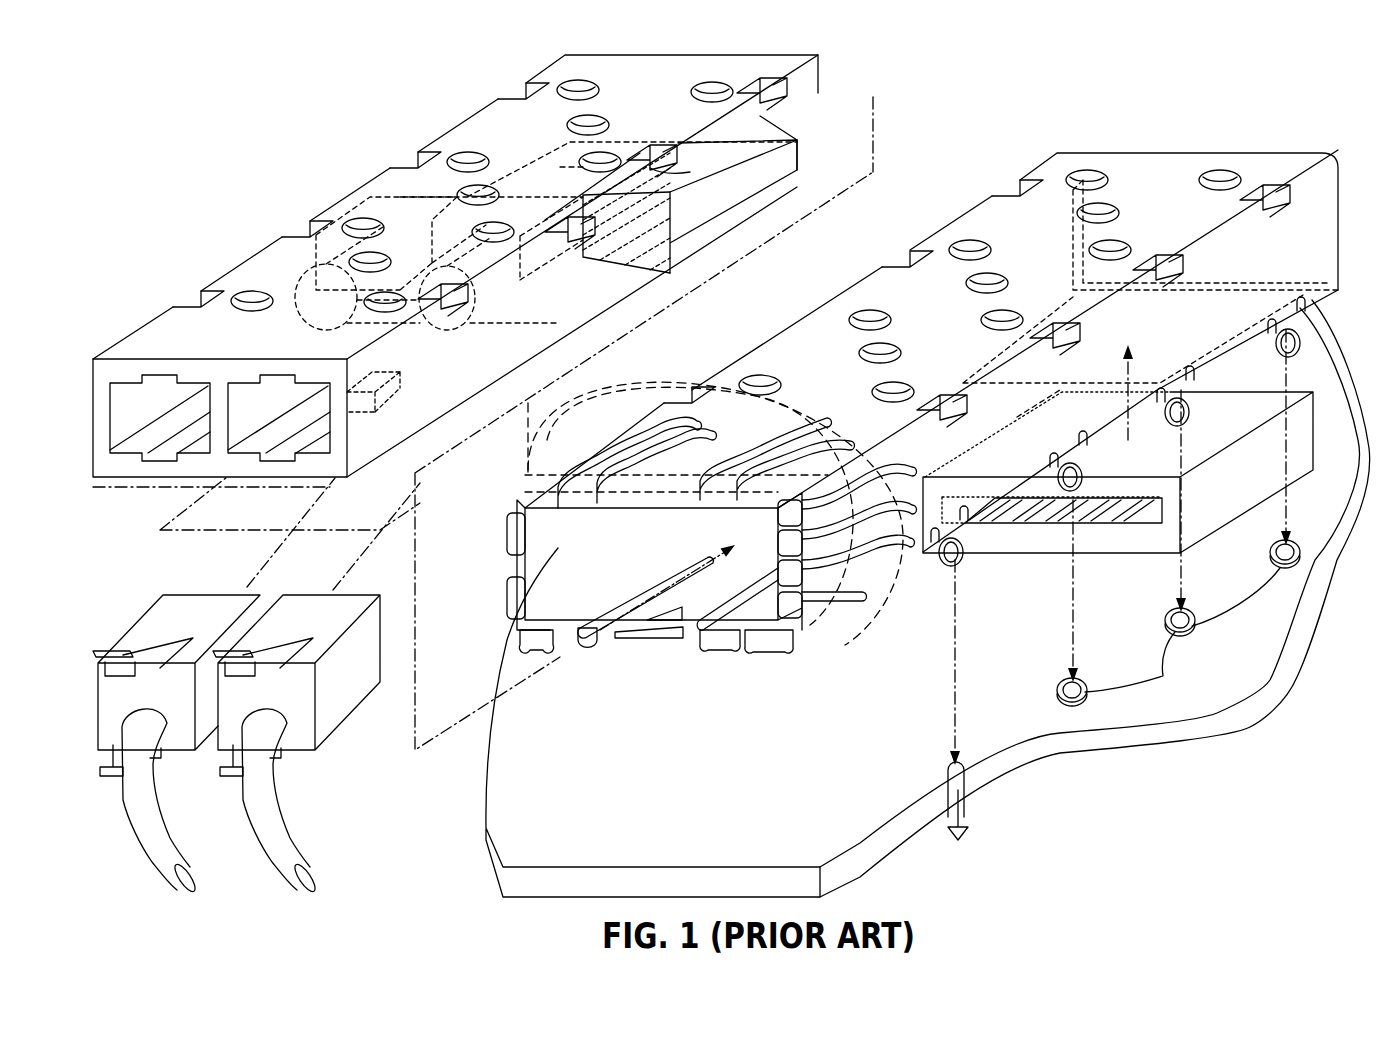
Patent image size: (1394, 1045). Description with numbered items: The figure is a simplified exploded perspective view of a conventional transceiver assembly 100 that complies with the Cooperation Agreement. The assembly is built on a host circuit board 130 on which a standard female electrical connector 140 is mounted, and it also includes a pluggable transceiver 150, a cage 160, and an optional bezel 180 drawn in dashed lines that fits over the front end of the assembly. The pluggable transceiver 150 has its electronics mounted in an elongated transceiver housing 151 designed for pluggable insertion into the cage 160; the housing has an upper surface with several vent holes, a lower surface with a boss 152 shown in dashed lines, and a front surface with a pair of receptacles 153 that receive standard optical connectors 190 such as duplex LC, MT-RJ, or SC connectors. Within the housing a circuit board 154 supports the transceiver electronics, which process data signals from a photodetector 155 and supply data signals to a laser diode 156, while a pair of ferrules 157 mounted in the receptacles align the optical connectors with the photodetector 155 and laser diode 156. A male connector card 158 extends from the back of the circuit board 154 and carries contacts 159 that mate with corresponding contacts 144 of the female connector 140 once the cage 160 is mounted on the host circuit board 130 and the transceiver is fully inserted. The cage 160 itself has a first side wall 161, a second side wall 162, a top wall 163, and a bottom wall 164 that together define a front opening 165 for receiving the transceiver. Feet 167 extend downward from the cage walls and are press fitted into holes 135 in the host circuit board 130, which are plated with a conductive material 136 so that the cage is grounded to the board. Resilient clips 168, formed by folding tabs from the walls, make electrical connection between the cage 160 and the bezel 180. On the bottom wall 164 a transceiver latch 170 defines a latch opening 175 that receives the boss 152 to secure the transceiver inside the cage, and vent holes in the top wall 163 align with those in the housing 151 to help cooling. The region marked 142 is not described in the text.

The transceiver assembly 100 is at (176, 116).
The host circuit board 130 is at (892, 797).
The holes 135 is at (968, 781).
The conductive material 136 is at (948, 768).
The female electrical connector 140 is at (1229, 499).
The contact slot 142 is at (1117, 519).
The contacts 144 is at (1027, 513).
The pluggable transceiver 150 is at (212, 258).
The transceiver housing 151 is at (181, 333).
The boss 152 is at (356, 421).
The receptacles 153 is at (237, 410).
The circuit board 154 is at (683, 205).
The photodetector 155 is at (572, 270).
The laser diode 156 is at (391, 194).
The ferrules 157 is at (445, 249).
The male connector card 158 is at (804, 158).
The contacts 159 is at (690, 172).
The cage 160 is at (982, 185).
The first side wall 161 is at (543, 540).
The second side wall 162 is at (915, 545).
The top wall 163 is at (788, 365).
The bottom wall 164 is at (550, 590).
The front opening 165 is at (1344, 183).
The feet 167 is at (1200, 400).
The resilient clips 168 is at (510, 543).
The transceiver latch 170 is at (640, 637).
The latch opening 175 is at (656, 622).
The bezel 180 is at (524, 440).
The optical connectors 190 is at (275, 618).